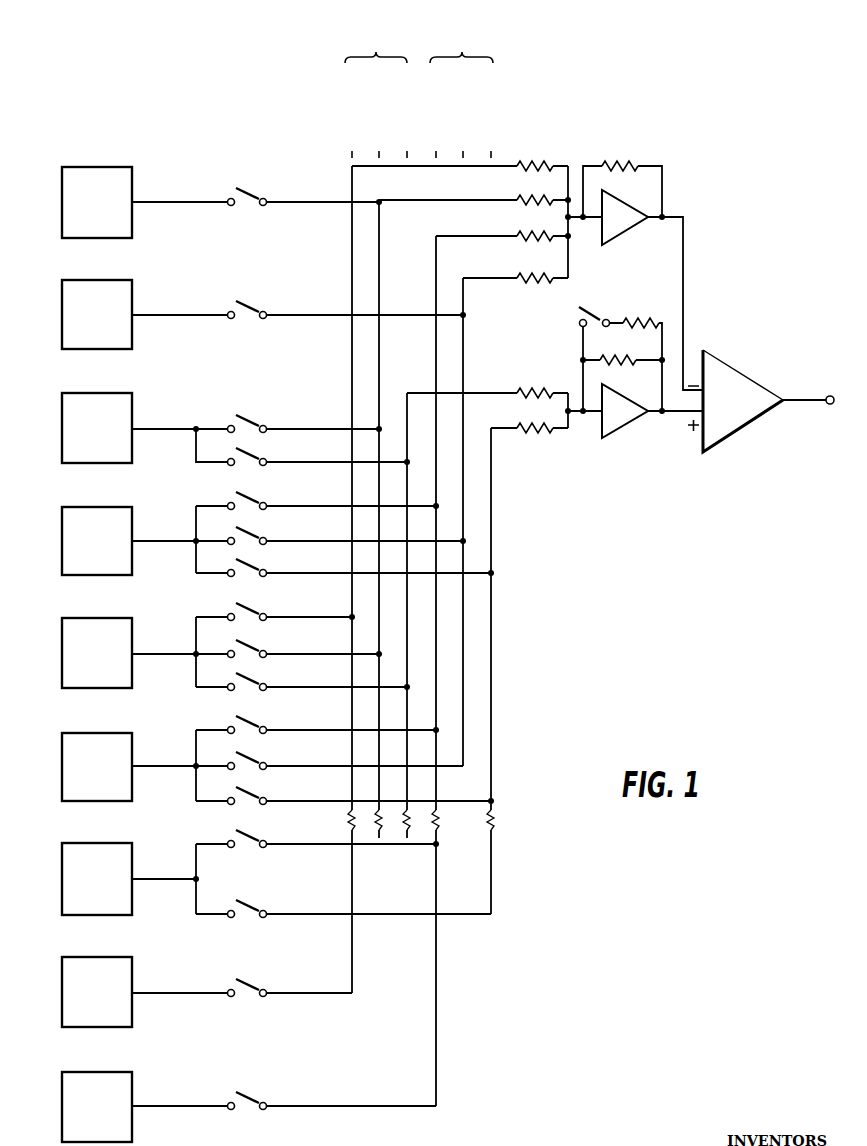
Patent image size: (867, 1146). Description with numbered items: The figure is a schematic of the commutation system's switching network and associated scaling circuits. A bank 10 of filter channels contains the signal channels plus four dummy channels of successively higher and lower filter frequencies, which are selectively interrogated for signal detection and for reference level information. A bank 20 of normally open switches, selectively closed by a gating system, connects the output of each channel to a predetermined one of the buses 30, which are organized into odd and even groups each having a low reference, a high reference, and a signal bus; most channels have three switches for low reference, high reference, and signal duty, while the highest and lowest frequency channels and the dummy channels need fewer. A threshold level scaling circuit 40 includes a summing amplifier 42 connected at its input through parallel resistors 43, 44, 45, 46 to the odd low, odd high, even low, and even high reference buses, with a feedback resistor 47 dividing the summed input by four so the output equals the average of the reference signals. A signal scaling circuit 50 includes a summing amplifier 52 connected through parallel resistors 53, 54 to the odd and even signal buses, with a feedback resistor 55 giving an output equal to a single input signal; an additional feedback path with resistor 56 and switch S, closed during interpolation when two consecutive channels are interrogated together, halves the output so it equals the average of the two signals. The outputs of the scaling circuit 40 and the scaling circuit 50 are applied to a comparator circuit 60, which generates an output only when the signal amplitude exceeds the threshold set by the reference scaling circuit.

The bank of filter channels 10 is at (38, 163).
The bank of selectively actuated switches 20 is at (231, 160).
The buses 30 is at (310, 58).
The threshold level scaling circuit 40 is at (680, 106).
The summing amplifier 42 is at (623, 232).
The resistor 43 is at (547, 161).
The resistor 44 is at (537, 200).
The resistor 45 is at (537, 236).
The resistor 46 is at (541, 277).
The feedback resistor 47 is at (611, 161).
The signal scaling circuit 50 is at (674, 490).
The summing amplifier 52 is at (620, 435).
The resistor 53 is at (541, 389).
The resistor 54 is at (530, 428).
The feedback resistor 55 is at (622, 364).
The resistor 56 is at (632, 320).
The comparator circuit 60 is at (763, 363).